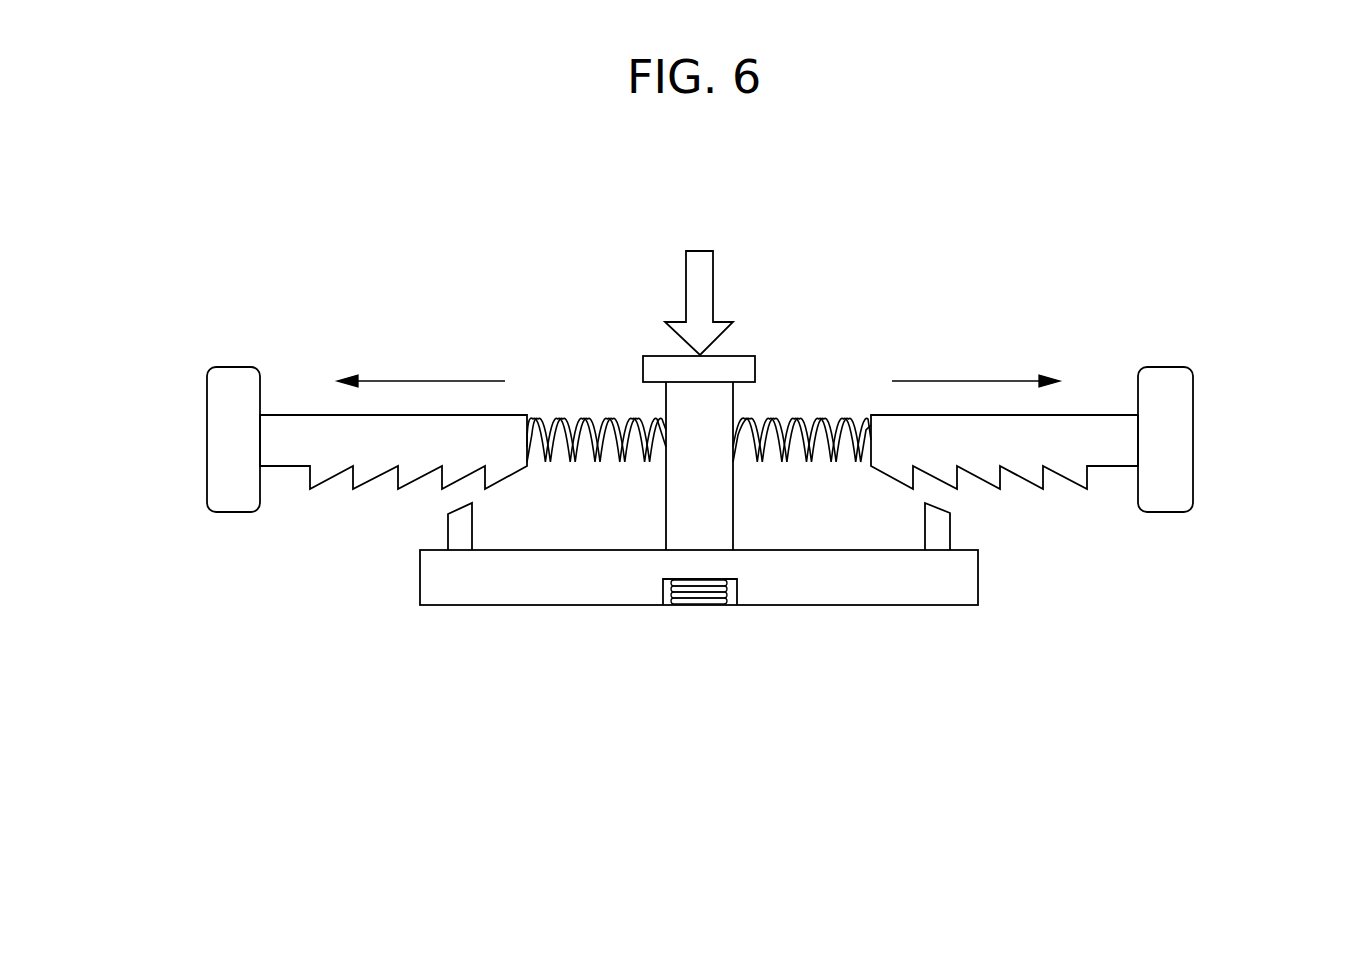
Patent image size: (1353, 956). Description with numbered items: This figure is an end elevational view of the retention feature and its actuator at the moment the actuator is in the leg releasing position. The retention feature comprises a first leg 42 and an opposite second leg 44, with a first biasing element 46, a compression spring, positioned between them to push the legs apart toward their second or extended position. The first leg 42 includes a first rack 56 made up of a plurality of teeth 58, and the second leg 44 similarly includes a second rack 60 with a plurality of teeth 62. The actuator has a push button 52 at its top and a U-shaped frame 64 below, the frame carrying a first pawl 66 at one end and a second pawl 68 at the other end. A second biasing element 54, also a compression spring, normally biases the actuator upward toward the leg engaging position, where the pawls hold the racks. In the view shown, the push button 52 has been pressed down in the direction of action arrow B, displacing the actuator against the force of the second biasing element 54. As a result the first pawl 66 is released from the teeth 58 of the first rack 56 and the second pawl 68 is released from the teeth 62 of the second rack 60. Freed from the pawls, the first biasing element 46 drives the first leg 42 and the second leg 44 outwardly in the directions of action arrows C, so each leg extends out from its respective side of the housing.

The first leg 42 is at (215, 434).
The second leg 44 is at (1185, 437).
The first biasing element 46 is at (588, 417).
The push button 52 is at (742, 362).
The second biasing element 54 is at (700, 605).
The first rack 56 is at (367, 499).
The teeth 58 is at (447, 474).
The second rack 60 is at (1016, 506).
The teeth 62 is at (940, 472).
The U-shaped frame 64 is at (518, 588).
The first pawl 66 is at (464, 530).
The second pawl 68 is at (942, 540).
The action arrow B is at (703, 292).
The action arrows C is at (412, 381).